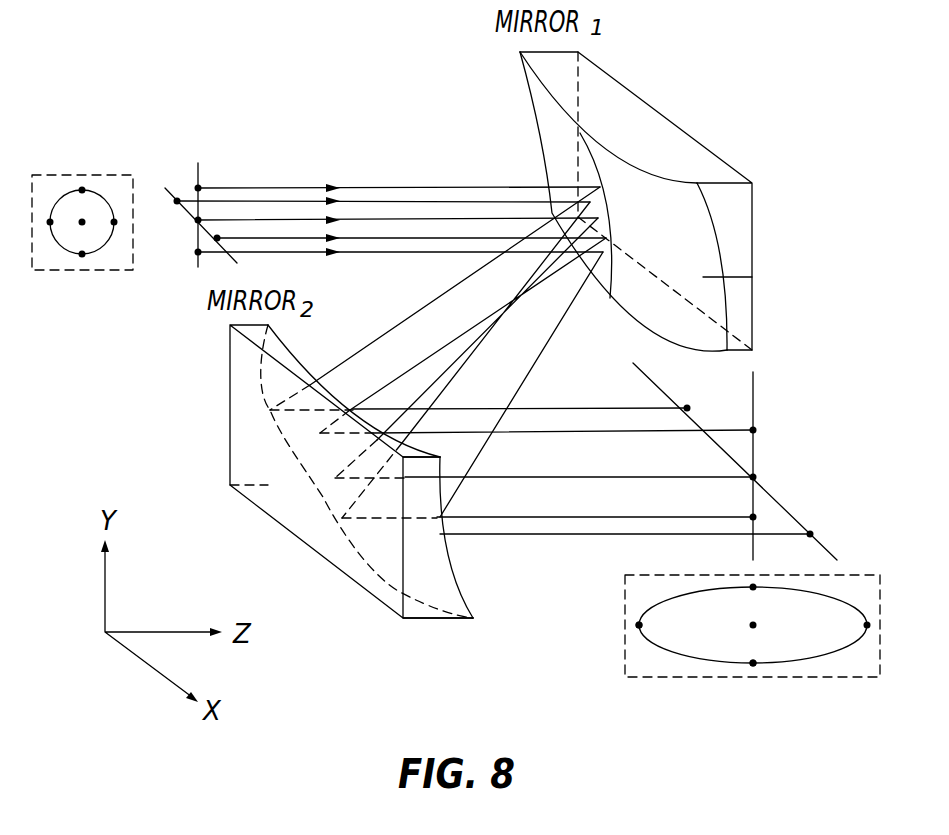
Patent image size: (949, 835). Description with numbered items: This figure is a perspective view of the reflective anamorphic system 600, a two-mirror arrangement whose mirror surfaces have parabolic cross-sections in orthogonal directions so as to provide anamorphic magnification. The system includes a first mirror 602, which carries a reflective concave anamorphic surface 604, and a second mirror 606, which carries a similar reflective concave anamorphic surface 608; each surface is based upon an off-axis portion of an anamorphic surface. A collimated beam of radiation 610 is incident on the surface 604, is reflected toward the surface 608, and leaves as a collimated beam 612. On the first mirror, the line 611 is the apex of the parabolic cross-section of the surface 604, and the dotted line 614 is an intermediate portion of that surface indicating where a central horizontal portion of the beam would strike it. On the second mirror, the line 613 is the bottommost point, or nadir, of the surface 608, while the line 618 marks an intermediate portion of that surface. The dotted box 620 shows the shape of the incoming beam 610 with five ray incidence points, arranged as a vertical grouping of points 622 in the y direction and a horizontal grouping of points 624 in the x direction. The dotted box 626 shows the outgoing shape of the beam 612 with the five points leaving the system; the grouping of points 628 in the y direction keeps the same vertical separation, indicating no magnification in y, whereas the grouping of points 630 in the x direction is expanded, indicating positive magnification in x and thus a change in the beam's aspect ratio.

The reflective anamorphic system 600 is at (728, 41).
The Mirror 1 602 is at (645, 104).
The anamorphic surface of Mirror 1 604 is at (695, 220).
The Mirror 2 606 is at (270, 325).
The anamorphic surface of Mirror 2 608 is at (430, 575).
The collimated beam of radiation 610 is at (295, 180).
The apex line 611 is at (597, 150).
The collimated output beam 612 is at (818, 489).
The nadir line 613 is at (328, 405).
The intermediate portion of surface 604 614 is at (742, 277).
The intermediate portion of surface 608 618 is at (430, 538).
The dotted box 620 is at (95, 174).
The vertical grouping of points 622 is at (77, 270).
The horizontal grouping of points 624 is at (145, 236).
The dotted box 626 is at (703, 575).
The grouping of points in the y direction 628 is at (753, 663).
The grouping of points in the x direction 630 is at (639, 625).